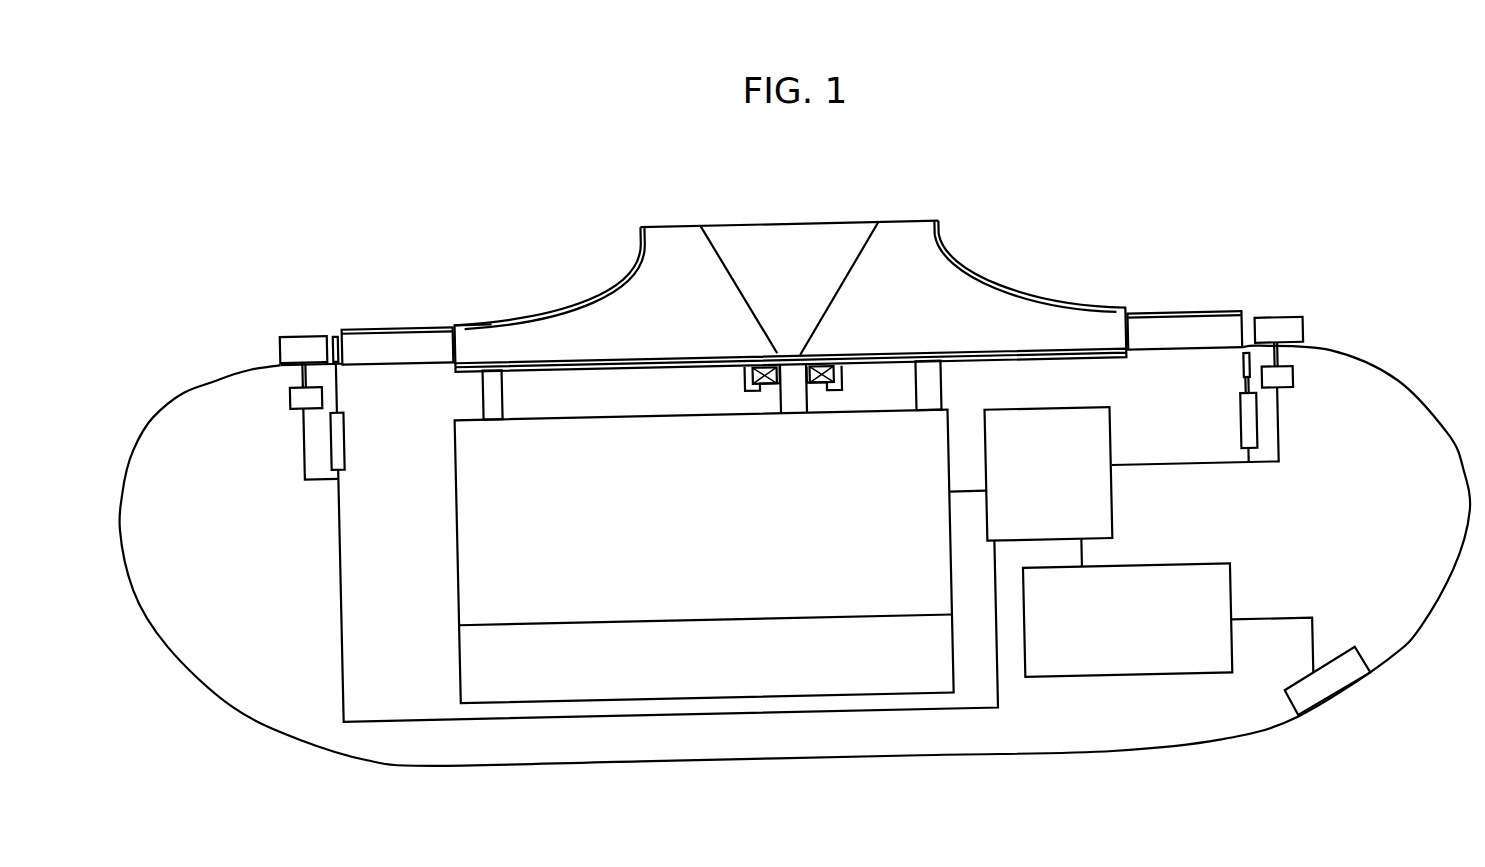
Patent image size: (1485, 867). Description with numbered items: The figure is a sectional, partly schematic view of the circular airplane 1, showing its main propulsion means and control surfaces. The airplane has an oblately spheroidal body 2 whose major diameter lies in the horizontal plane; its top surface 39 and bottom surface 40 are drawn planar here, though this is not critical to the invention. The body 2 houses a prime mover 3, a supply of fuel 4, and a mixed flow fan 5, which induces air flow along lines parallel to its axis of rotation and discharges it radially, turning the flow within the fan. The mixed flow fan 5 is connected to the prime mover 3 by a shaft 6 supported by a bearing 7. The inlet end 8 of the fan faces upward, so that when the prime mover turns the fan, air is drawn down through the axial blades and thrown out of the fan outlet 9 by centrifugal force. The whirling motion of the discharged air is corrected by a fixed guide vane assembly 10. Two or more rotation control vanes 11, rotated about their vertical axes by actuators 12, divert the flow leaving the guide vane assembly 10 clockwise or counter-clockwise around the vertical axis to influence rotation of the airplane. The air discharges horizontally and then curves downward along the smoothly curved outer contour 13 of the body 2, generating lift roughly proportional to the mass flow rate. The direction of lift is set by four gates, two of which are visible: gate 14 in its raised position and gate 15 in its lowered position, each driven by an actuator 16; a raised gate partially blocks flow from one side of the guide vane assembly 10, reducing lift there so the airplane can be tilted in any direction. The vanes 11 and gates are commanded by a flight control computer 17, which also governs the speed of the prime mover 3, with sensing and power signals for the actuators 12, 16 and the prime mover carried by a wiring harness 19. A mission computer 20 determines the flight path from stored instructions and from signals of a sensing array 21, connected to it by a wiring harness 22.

The circular airplane 1 is at (185, 365).
The oblately spheroidal body 2 is at (163, 438).
The prime mover 3 is at (564, 618).
The supply of fuel 4 is at (744, 681).
The mixed flow fan 5 is at (950, 273).
The shaft 6 is at (794, 378).
The bearing 7 is at (770, 365).
The inlet end 8 is at (754, 216).
The fan outlet 9 is at (493, 335).
The fixed guide vane assembly 10 is at (420, 334).
The rotation control vanes 11 is at (300, 332).
The actuators 12 is at (292, 381).
The smoothly curved outer contour 13 is at (1456, 448).
The gate 14 is at (336, 337).
The gate 15 is at (1240, 378).
The actuator 16 is at (338, 433).
The flight control computer 17 is at (1096, 517).
The wiring harness 19 is at (1281, 454).
The mission computer 20 is at (1148, 670).
The sensing array 21 is at (1332, 695).
The wiring harness 22 is at (1270, 628).
The top surface 39 is at (554, 358).
The bottom surface 40 is at (636, 760).